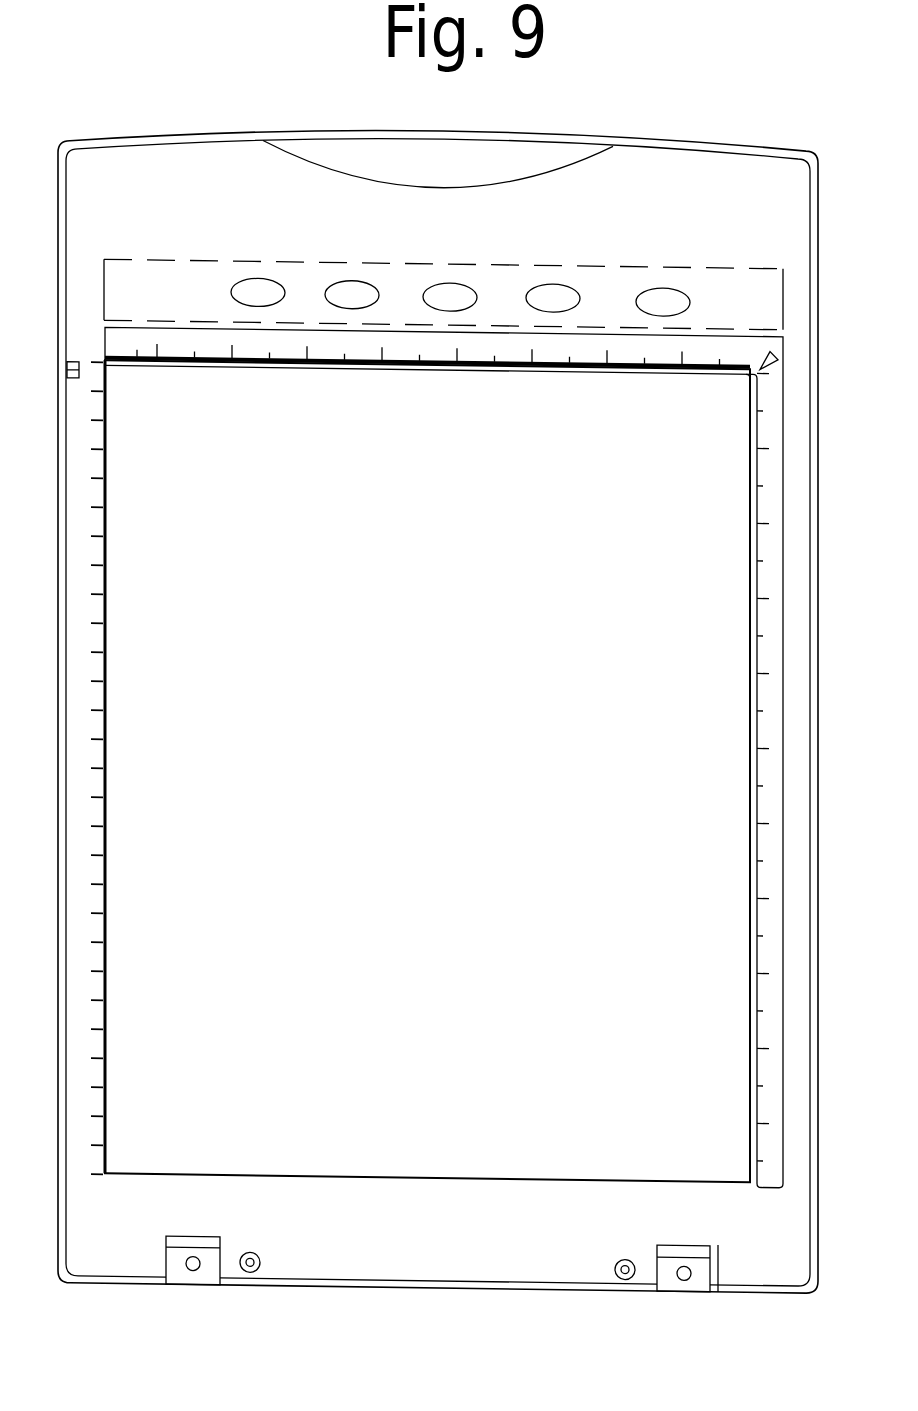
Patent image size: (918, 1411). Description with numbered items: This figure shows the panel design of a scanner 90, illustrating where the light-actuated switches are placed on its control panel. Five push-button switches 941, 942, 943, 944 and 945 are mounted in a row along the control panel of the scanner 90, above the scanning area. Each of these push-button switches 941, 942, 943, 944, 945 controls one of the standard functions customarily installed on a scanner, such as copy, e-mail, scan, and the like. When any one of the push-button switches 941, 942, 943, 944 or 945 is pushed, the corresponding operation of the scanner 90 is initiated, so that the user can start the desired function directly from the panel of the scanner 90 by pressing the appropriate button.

The scanner 90 is at (465, 765).
The push-button switch 941 is at (256, 296).
The push-button switch 942 is at (356, 293).
The push-button switch 943 is at (454, 293).
The push-button switch 944 is at (555, 296).
The push-button switch 945 is at (672, 291).